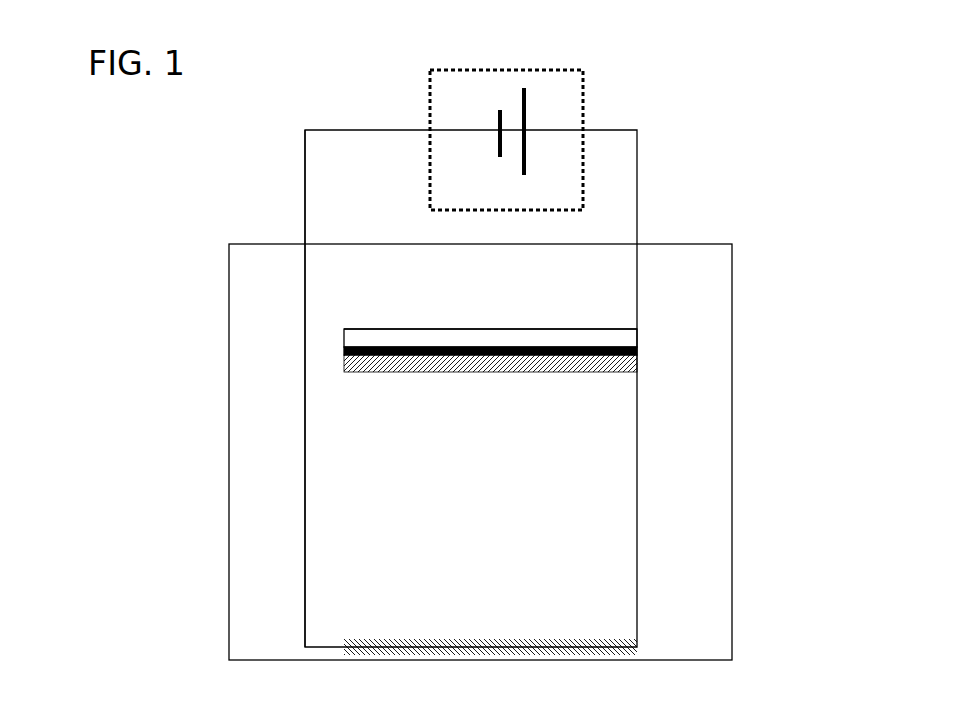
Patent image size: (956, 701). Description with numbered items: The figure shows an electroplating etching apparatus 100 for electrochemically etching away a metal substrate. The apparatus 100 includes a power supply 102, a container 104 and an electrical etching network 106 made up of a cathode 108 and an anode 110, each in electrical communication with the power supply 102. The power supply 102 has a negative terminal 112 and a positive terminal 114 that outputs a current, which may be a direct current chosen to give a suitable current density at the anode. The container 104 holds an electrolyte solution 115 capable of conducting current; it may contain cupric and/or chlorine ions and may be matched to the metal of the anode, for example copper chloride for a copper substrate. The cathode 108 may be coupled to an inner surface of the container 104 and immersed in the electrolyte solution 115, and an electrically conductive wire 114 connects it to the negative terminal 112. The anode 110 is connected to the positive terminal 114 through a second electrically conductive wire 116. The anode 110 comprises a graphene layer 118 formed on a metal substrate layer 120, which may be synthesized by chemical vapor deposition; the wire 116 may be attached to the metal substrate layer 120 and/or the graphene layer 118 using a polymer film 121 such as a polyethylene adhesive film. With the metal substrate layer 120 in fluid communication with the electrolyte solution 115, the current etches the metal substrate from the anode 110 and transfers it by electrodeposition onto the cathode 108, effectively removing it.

The electroplating etching apparatus 100 is at (148, 557).
The power supply 102 is at (470, 67).
The container 104 is at (732, 278).
The electrical etching network 106 is at (302, 275).
The cathode 108 is at (637, 647).
The anode 110 is at (488, 327).
The negative terminal 112 is at (498, 140).
The positive terminal 114 is at (305, 189).
The electrolyte solution 115 is at (623, 580).
The second electrically conductive wire 116 is at (637, 166).
The graphene layer 118 is at (640, 352).
The metal substrate layer 120 is at (592, 368).
The polymer film 121 is at (612, 334).